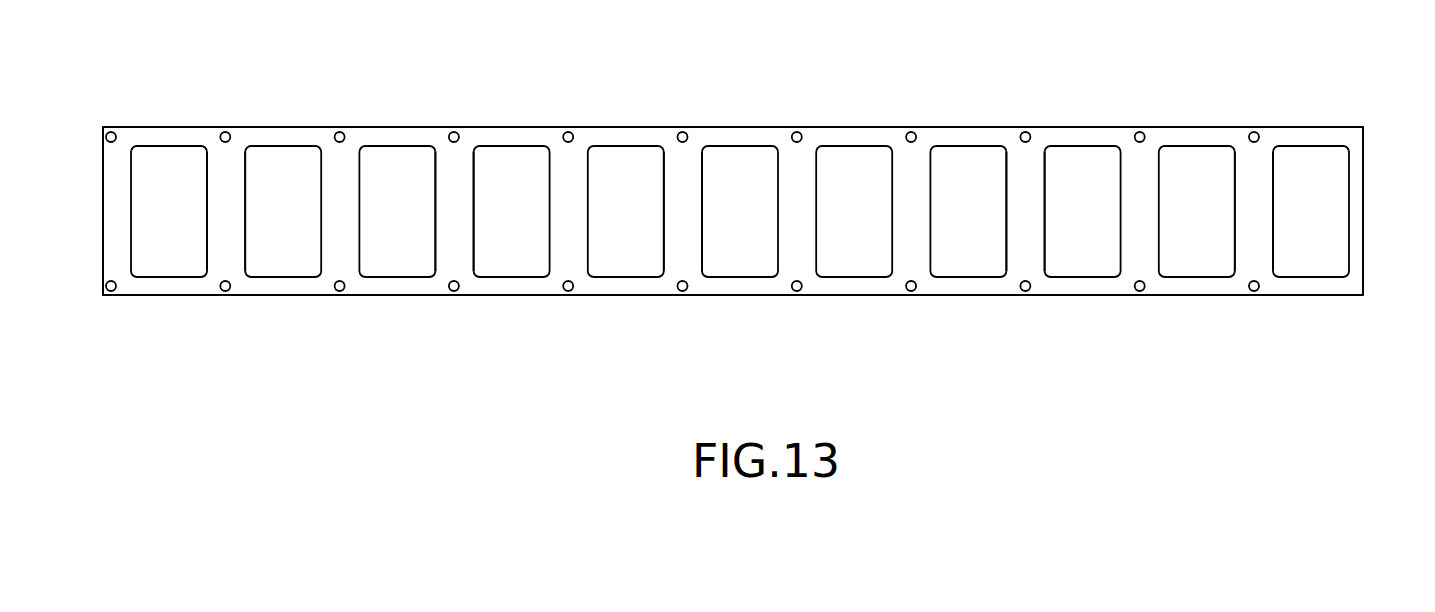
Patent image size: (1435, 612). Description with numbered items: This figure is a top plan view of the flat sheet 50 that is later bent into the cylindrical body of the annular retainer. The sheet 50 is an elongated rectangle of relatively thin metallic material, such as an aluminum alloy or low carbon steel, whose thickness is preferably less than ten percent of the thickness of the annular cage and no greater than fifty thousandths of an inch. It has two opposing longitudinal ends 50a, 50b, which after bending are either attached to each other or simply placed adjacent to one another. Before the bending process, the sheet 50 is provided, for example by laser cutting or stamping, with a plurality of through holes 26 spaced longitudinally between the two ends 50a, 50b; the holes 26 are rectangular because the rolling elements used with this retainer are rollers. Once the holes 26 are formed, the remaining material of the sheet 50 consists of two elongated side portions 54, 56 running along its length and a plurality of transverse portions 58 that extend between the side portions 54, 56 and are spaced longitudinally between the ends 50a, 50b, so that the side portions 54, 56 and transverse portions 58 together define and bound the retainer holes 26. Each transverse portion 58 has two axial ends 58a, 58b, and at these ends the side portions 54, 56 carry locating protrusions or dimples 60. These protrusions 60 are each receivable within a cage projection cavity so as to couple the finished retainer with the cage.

The sheet 50 is at (647, 90).
The longitudinal end 50a is at (1364, 199).
The longitudinal end 50b is at (102, 162).
The through holes 26 is at (283, 160).
The locating protrusions 60 is at (342, 133).
The transverse portions 58 is at (242, 234).
The axial end of transverse portion 58a is at (457, 267).
The axial end of transverse portion 58b is at (463, 152).
The side portion 56 is at (736, 118).
The side portion 54 is at (742, 298).